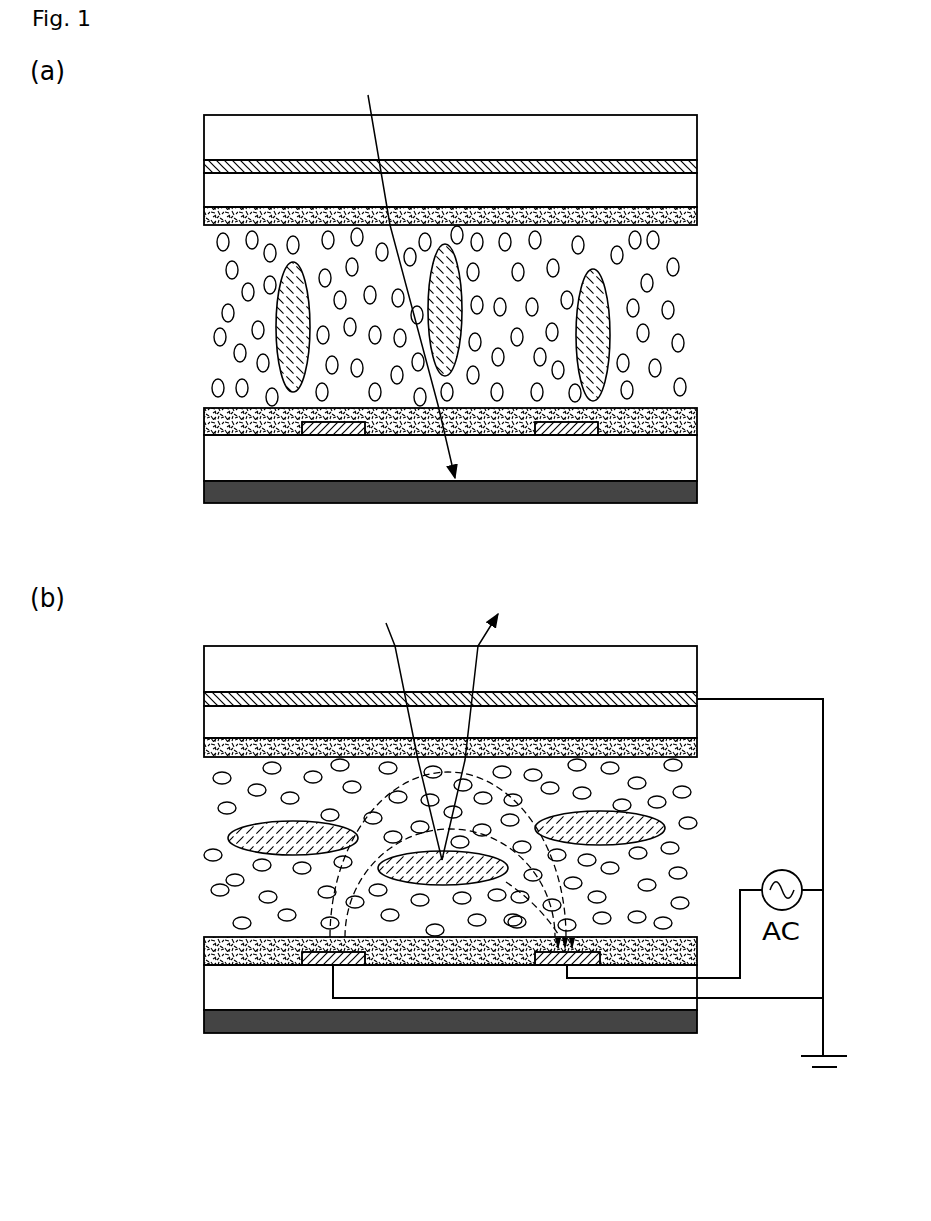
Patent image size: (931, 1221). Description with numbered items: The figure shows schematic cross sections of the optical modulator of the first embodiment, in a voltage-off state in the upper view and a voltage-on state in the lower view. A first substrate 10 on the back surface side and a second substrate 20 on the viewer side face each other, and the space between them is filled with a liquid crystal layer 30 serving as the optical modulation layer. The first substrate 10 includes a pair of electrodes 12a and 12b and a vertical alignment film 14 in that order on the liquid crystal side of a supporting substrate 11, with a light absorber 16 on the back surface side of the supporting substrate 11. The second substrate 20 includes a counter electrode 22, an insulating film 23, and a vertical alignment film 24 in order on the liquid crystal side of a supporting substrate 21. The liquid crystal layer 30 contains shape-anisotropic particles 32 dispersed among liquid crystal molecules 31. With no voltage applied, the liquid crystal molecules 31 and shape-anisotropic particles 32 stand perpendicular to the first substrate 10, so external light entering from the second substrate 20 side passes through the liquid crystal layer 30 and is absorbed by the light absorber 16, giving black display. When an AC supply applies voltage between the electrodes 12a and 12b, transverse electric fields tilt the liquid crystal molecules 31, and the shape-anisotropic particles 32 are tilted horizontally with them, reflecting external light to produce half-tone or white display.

The first substrate 10 is at (128, 408).
The supporting substrate 11 is at (210, 453).
The electrode 12a is at (330, 435).
The electrode 12b is at (565, 435).
The vertical alignment film 14 is at (207, 420).
The light absorber 16 is at (208, 491).
The second substrate 20 is at (128, 113).
The supporting substrate 21 is at (212, 138).
The counter electrode 22 is at (210, 163).
The insulating film 23 is at (211, 193).
The vertical alignment film 24 is at (204, 215).
The liquid crystal layer 30 is at (702, 227).
The liquid crystal molecules 31 is at (243, 291).
The shape-anisotropic particles 32 is at (293, 326).